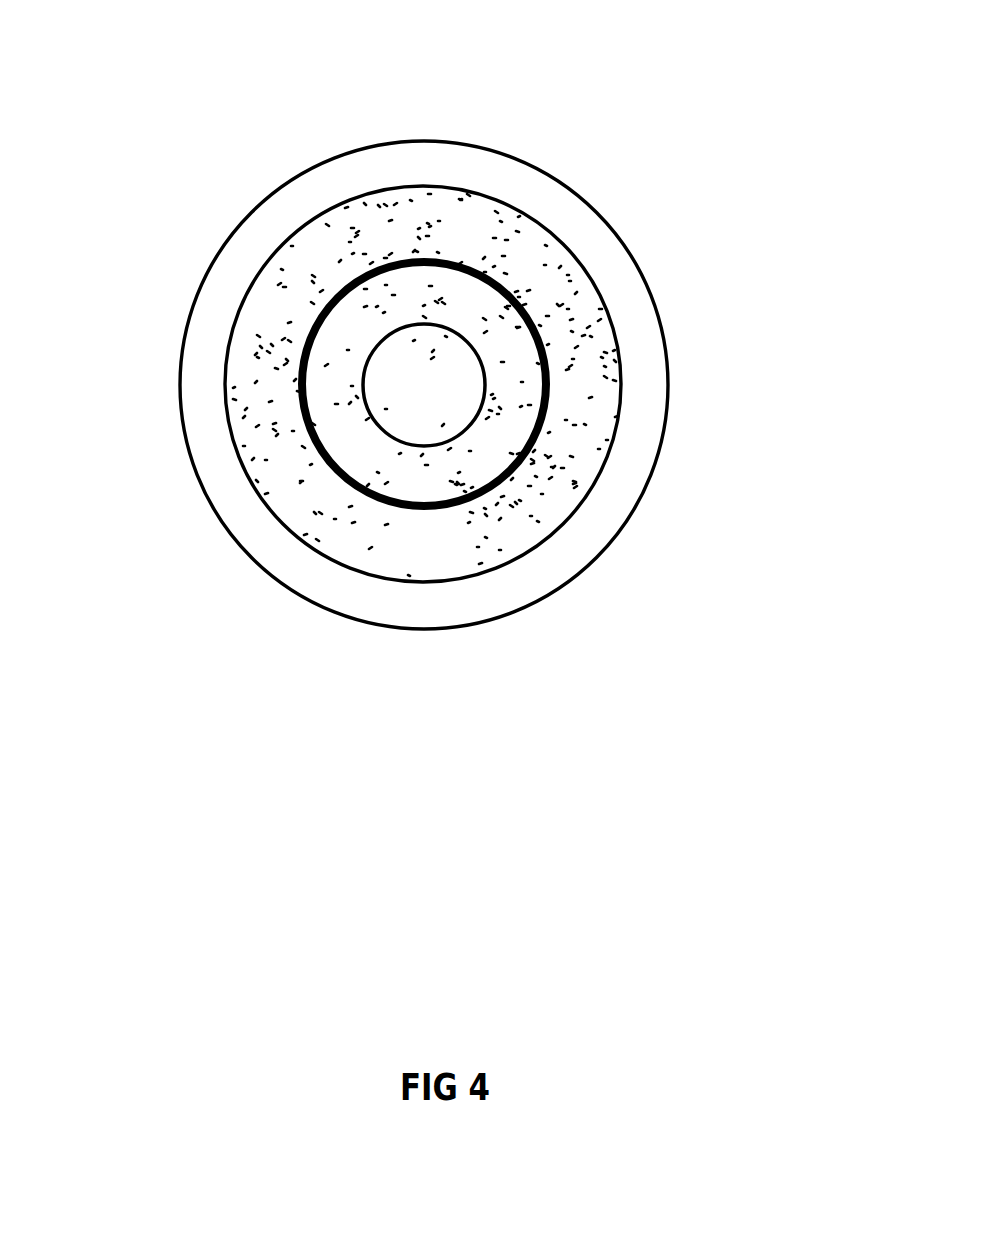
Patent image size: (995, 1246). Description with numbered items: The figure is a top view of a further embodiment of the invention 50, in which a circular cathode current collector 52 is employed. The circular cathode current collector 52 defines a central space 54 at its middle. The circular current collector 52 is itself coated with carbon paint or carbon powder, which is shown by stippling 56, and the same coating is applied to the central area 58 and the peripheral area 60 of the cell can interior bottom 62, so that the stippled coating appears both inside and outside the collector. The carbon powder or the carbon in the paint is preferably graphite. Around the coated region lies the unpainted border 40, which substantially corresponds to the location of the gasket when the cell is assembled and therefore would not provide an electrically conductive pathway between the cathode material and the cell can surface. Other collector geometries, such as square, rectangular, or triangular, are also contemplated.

The unpainted border 40 is at (643, 357).
The further embodiment of the invention 50 is at (867, 130).
The circular cathode current collector 52 is at (508, 418).
The central space 54 is at (425, 327).
The stippling 56 is at (801, 566).
The central area 58 is at (393, 417).
The peripheral area 60 is at (398, 568).
The cell can interior bottom 62 is at (257, 425).